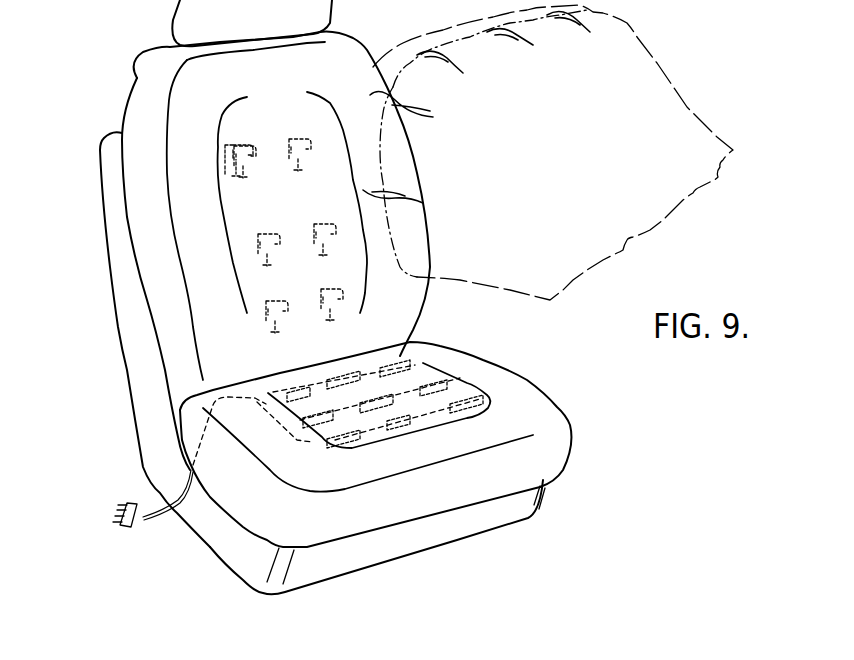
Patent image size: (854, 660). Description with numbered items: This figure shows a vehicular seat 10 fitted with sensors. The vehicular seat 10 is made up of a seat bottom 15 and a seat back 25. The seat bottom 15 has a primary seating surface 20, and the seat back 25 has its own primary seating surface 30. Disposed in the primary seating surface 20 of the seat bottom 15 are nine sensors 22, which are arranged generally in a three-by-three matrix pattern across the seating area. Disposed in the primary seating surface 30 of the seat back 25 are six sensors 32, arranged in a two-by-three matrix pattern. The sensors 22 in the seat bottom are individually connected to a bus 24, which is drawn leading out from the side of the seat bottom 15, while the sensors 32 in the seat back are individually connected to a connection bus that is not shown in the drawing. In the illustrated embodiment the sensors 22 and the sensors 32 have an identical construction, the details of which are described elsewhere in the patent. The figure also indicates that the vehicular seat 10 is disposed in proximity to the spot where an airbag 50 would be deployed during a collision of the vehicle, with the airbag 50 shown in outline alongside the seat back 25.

The vehicular seat 10 is at (113, 407).
The seat bottom 15 is at (527, 390).
The primary seating surface 20 is at (440, 417).
The sensors 22 is at (430, 382).
The bus 24 is at (129, 528).
The seat back 25 is at (135, 76).
The primary seating surface 30 is at (248, 212).
The sensors 32 is at (238, 152).
The airbag 50 is at (548, 164).